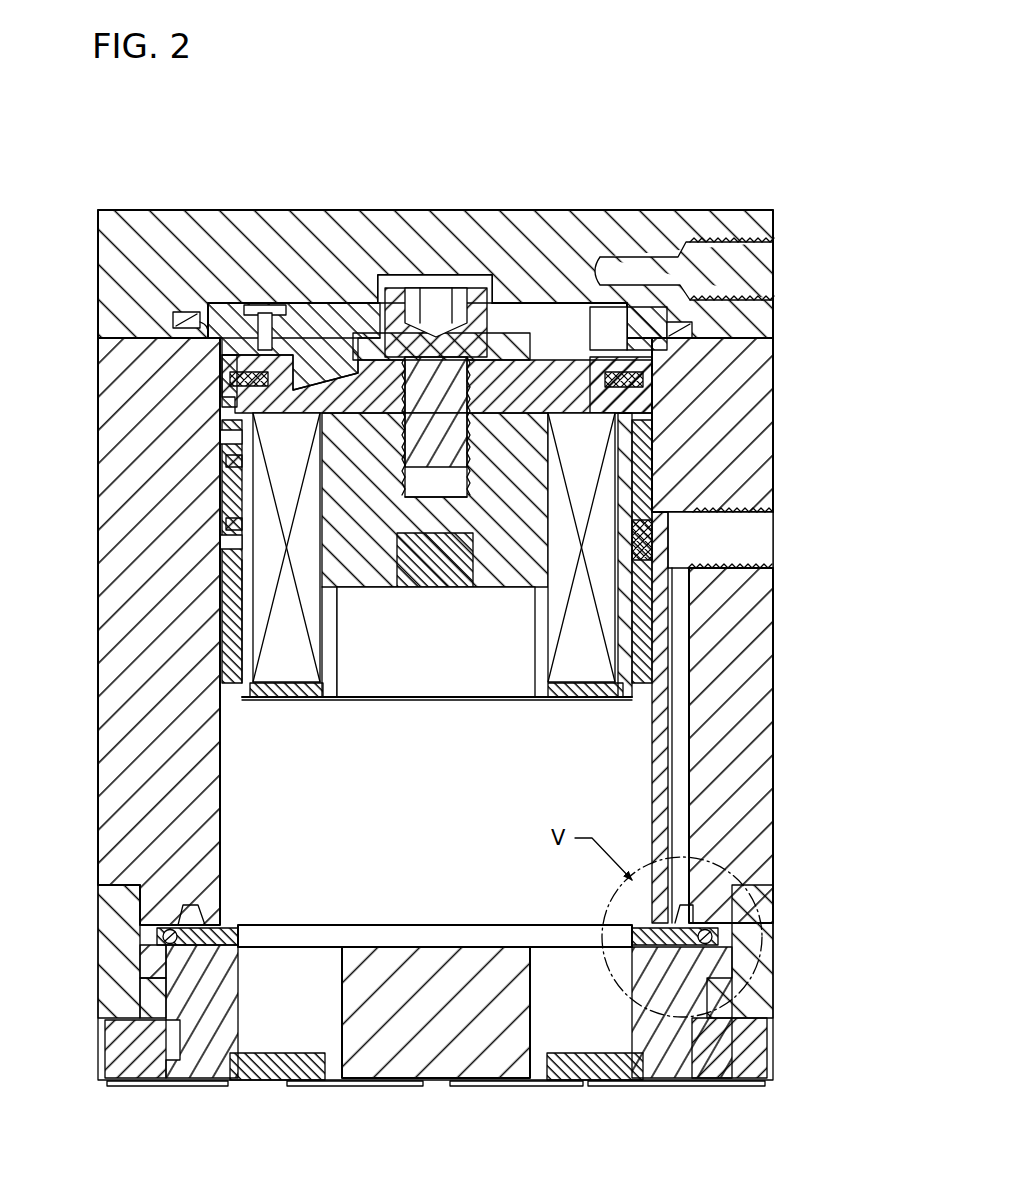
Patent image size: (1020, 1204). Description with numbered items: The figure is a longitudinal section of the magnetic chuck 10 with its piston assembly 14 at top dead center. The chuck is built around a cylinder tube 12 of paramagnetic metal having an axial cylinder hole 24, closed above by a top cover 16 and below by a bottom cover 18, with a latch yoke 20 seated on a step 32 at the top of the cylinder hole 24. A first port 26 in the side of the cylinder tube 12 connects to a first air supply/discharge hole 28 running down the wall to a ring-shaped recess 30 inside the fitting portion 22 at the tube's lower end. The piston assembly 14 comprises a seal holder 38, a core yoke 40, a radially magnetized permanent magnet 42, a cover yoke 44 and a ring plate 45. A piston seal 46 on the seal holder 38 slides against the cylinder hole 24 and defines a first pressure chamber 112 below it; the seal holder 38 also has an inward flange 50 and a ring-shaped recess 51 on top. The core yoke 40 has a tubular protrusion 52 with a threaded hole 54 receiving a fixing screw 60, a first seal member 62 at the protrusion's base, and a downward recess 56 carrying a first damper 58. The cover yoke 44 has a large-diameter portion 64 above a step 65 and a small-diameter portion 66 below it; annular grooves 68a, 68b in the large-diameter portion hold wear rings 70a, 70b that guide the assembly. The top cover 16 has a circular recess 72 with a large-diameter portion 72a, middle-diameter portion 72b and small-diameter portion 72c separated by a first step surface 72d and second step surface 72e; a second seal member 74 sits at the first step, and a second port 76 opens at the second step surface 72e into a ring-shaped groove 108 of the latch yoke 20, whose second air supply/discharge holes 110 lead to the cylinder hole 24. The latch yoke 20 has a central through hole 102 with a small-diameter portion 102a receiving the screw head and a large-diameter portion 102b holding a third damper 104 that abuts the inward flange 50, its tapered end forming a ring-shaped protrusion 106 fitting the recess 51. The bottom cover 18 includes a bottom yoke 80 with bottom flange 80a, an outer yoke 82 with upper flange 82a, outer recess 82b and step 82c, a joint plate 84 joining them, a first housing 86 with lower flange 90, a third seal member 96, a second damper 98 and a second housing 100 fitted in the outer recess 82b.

The magnetic chuck 10 is at (722, 108).
The cylinder tube 12 is at (80, 386).
The piston assembly 14 is at (402, 268).
The top cover 16 is at (703, 222).
The bottom cover 18 is at (104, 1081).
The latch yoke 20 is at (655, 308).
The fitting portion 22 is at (168, 927).
The cylinder hole 24 is at (222, 786).
The first port 26 is at (745, 522).
The first air supply/discharge hole 28 is at (720, 656).
The ring-shaped recess 30 is at (112, 896).
The step 32 is at (232, 364).
The seal holder 38 is at (625, 388).
The core yoke 40 is at (360, 453).
The permanent magnet 42 is at (700, 472).
The cover yoke 44 is at (645, 428).
The ring plate 45 is at (587, 692).
The piston seal 46 is at (640, 380).
The inward flange 50 is at (485, 500).
The ring-shaped recess 51 is at (580, 343).
The tubular protrusion 52 is at (250, 405).
The threaded hole 54 is at (432, 522).
The recess 56 is at (332, 692).
The first damper 58 is at (385, 612).
The fixing screw 60 is at (432, 280).
The first seal member 62 is at (500, 430).
The large-diameter portion 64 is at (232, 500).
The step 65 is at (662, 600).
The small-diameter portion 66 is at (240, 620).
The annular groove 68a is at (228, 462).
The annular groove 68b is at (228, 525).
The wear ring 70a is at (235, 440).
The wear ring 70b is at (235, 545).
The circular recess 72 is at (275, 263).
The large-diameter portion 72a is at (185, 322).
The middle-diameter portion 72b is at (205, 330).
The small-diameter portion 72c is at (386, 238).
The first step surface 72d is at (230, 368).
The second step surface 72e is at (300, 322).
The second seal member 74 is at (652, 332).
The second port 76 is at (758, 262).
The bottom yoke 80 is at (449, 1041).
The bottom flange 80a is at (537, 1060).
The outer yoke 82 is at (185, 1038).
The upper flange 82a is at (152, 960).
The outer recess 82b is at (142, 1050).
The step 82c is at (255, 1065).
The joint plate 84 is at (608, 1065).
The first housing 86 is at (695, 988).
The lower flange 90 is at (714, 1000).
The third seal member 96 is at (705, 935).
The second damper 98 is at (688, 960).
The second housing 100 is at (742, 1062).
The central through hole 102 is at (458, 224).
The small-diameter portion 102a is at (415, 360).
The large-diameter portion 102b is at (480, 372).
The third damper 104 is at (505, 350).
The ring-shaped protrusion 106 is at (572, 395).
The ring-shaped groove 108 is at (633, 318).
The second air supply/discharge holes 110 is at (683, 336).
The first pressure chamber 112 is at (620, 762).